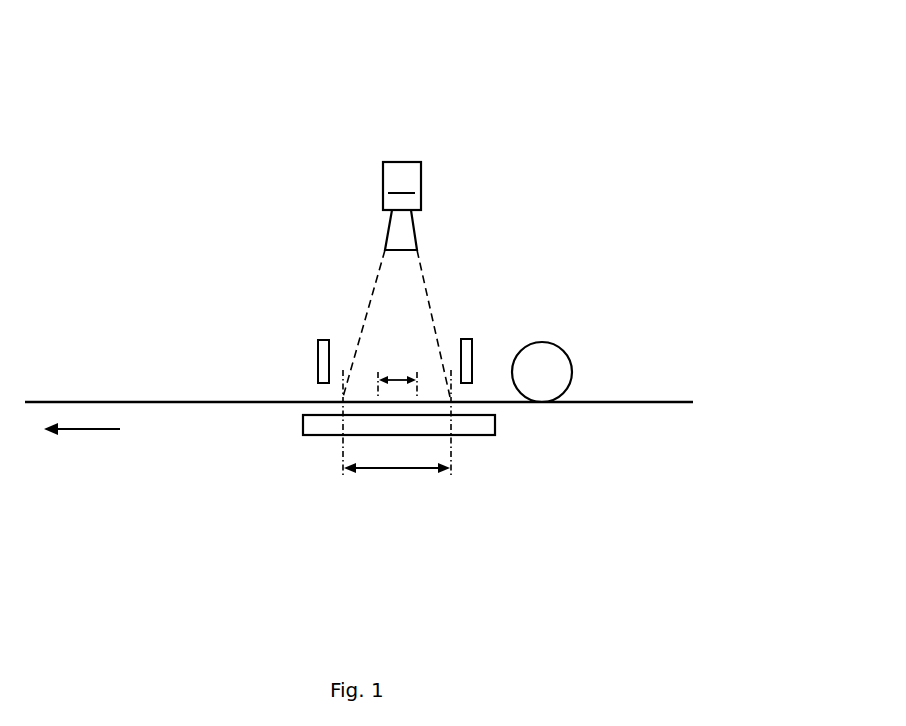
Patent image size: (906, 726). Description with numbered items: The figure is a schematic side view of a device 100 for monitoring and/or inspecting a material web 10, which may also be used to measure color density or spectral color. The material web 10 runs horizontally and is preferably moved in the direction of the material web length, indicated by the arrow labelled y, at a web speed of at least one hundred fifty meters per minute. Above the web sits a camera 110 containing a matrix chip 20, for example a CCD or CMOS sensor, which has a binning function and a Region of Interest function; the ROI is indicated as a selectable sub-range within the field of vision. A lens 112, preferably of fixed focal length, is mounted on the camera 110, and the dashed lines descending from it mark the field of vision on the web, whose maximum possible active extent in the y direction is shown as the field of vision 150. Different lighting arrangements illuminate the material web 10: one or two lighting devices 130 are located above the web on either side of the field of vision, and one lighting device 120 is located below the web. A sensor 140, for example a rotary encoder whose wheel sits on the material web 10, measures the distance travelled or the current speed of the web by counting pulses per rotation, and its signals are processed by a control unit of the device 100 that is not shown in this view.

The device 100 is at (522, 106).
The material web 10 is at (32, 402).
The matrix chip 20 is at (399, 193).
The camera 110 is at (421, 195).
The lens 112 is at (413, 233).
The Region of Interest ROI is at (388, 377).
The lighting devices 130 is at (317, 360).
The sensor 140 is at (555, 342).
The lighting device 120 is at (482, 435).
The maximum possible active field of vision 150 is at (392, 472).